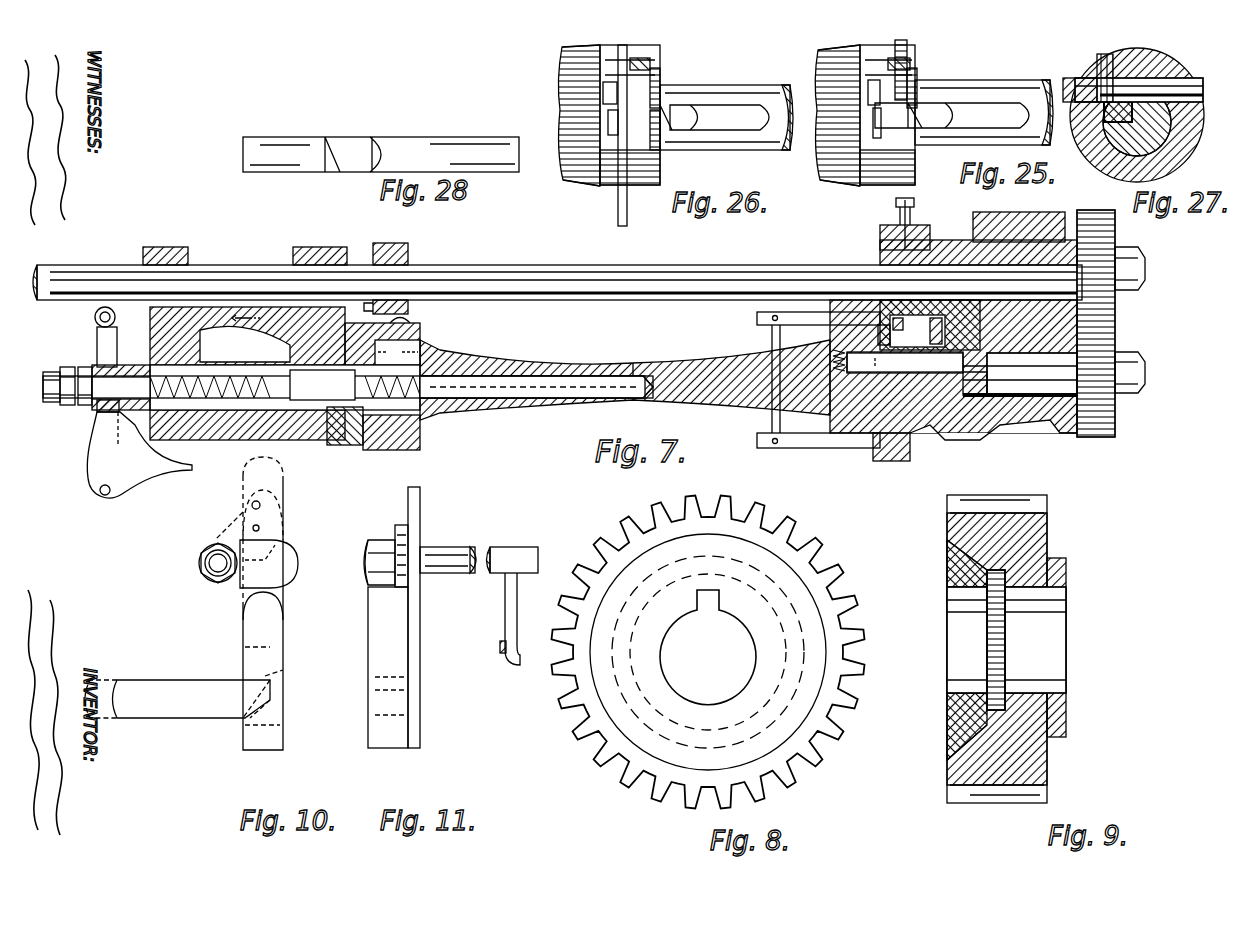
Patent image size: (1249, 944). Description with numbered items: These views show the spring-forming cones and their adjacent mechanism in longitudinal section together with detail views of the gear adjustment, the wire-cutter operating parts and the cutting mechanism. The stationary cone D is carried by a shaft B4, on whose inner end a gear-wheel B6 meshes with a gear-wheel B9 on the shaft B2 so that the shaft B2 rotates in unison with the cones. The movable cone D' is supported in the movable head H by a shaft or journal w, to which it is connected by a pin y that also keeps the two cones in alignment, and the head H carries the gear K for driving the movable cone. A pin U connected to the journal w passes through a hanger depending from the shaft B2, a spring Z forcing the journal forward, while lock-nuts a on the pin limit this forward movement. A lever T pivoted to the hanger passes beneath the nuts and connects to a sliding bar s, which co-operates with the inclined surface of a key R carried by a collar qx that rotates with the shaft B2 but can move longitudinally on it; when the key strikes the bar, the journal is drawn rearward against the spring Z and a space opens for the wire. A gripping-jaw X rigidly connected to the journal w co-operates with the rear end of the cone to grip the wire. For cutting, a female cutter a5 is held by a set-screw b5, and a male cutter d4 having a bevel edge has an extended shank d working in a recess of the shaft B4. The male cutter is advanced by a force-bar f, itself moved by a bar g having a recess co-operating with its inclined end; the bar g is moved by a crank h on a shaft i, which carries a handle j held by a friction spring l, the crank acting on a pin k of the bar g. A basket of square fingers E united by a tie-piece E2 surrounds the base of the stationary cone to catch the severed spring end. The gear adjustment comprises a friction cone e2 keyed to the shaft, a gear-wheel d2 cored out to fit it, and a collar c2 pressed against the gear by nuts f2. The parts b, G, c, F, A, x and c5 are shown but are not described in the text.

In FIG. 7, the shaft B2 is at (73, 275).
In FIG. 7, the collar qx is at (390, 243).
In FIG. 7, the key R is at (410, 307).
In FIG. 7, the movable head H is at (178, 462).
In FIG. 7, the shaft or journal w is at (230, 355).
In FIG. 7, the sliding bar s is at (247, 309).
In FIG. 7, the housing boss b is at (420, 342).
In FIG. 7, the gripping-jaw X is at (348, 385).
In FIG. 7, the pin U is at (47, 400).
In FIG. 7, the lock-nuts a is at (66, 367).
In FIG. 7, the lever T is at (72, 430).
In FIG. 7, the spring Z is at (480, 420).
In FIG. 7, the gear K is at (340, 445).
In FIG. 7, the gland G is at (385, 450).
In FIG. 7, the stationary cone D is at (625, 381).
In FIG. 26, the stationary cone D is at (579, 124).
In FIG. 25, the stationary cone D is at (837, 124).
In FIG. 27, the stationary cone D is at (1140, 115).
In FIG. 7, the movable cone D' is at (548, 416).
In FIG. 7, the pin y is at (598, 402).
In FIG. 7, the fingers E is at (806, 316).
In FIG. 7, the tie-piece E2 is at (772, 334).
In FIG. 7, the spring / collar c is at (838, 356).
In FIG. 25, the spring / collar c is at (900, 42).
In FIG. 7, the flange F is at (910, 452).
In FIG. 26, the flange F is at (660, 166).
In FIG. 25, the flange F is at (916, 160).
In FIG. 7, the right housing A is at (1025, 222).
In FIG. 7, the set screw x is at (905, 218).
In FIG. 7, the handle j is at (940, 325).
In FIG. 11, the handle j is at (505, 622).
In FIG. 7, the force-bar f is at (911, 331).
In FIG. 10, the force-bar f is at (184, 694).
In FIG. 7, the shank d is at (905, 362).
In FIG. 28, the shank d is at (381, 154).
In FIG. 26, the shank d is at (719, 117).
In FIG. 25, the shank d is at (952, 115).
In FIG. 27, the shank d is at (1105, 115).
In FIG. 7, the shaft B4 is at (1055, 428).
In FIG. 26, the shaft B4 is at (730, 95).
In FIG. 25, the shaft B4 is at (985, 90).
In FIG. 27, the shaft B4 is at (1170, 115).
In FIG. 7, the gear-wheel B9 is at (1100, 295).
In FIG. 7, the nuts f2 is at (1140, 286).
In FIG. 7, the gear-wheel B6 is at (1115, 420).
In FIG. 28, the male cutter d4 is at (335, 142).
In FIG. 26, the male cutter d4 is at (669, 117).
In FIG. 25, the male cutter d4 is at (930, 115).
In FIG. 26, the bar c5 is at (628, 206).
In FIG. 26, the set-screw b5 is at (650, 62).
In FIG. 25, the set-screw b5 is at (912, 62).
In FIG. 27, the set-screw b5 is at (1105, 56).
In FIG. 26, the female cutter a5 is at (640, 92).
In FIG. 25, the female cutter a5 is at (900, 90).
In FIG. 27, the female cutter a5 is at (1068, 84).
In FIG. 10, the bar g is at (263, 603).
In FIG. 11, the bar g is at (394, 617).
In FIG. 10, the pin k is at (249, 555).
In FIG. 11, the pin k is at (400, 525).
In FIG. 10, the crank h is at (269, 564).
In FIG. 11, the crank h is at (385, 540).
In FIG. 10, the shaft i is at (198, 572).
In FIG. 11, the shaft i is at (462, 558).
In FIG. 11, the friction spring l is at (500, 652).
In FIG. 8, the gear-wheel d2 is at (708, 652).
In FIG. 9, the gear-wheel d2 is at (1025, 505).
In FIG. 8, the friction cone e2 is at (718, 647).
In FIG. 9, the friction cone e2 is at (955, 578).
In FIG. 9, the collar c2 is at (1066, 583).